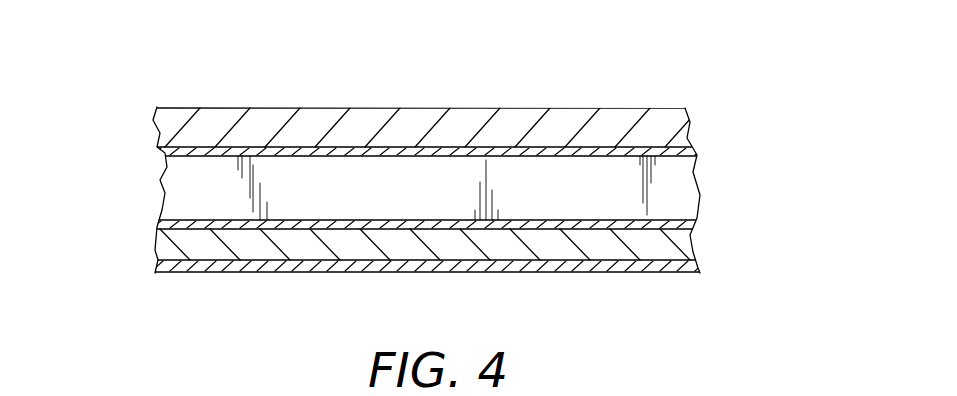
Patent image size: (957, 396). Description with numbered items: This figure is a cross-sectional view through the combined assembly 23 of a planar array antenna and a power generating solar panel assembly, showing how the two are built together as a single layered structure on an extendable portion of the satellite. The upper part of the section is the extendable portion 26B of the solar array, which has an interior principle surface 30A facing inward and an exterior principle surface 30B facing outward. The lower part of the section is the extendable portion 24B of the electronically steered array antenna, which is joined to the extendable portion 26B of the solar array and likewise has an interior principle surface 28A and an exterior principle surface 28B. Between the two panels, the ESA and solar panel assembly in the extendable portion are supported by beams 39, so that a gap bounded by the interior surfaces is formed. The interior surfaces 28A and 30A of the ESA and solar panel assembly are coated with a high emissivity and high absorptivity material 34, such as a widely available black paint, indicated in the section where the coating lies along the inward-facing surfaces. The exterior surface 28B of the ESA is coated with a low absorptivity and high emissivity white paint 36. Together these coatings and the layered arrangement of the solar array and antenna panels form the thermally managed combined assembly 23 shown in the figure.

The combined assembly 23 is at (669, 87).
The extendable portion of solar array 26B is at (491, 106).
The exterior principle surface of solar array 30B is at (288, 108).
The interior principle surface of solar array 30A is at (436, 158).
The high emissivity and high absorptivity material 34 is at (192, 157).
The beams 39 is at (412, 197).
The interior principle surface of ESA 28A is at (238, 220).
The extendable portion of ESA 24B is at (520, 277).
The exterior principle surface of ESA 28B is at (303, 261).
The low absorptivity and high emissivity white paint 36 is at (658, 273).